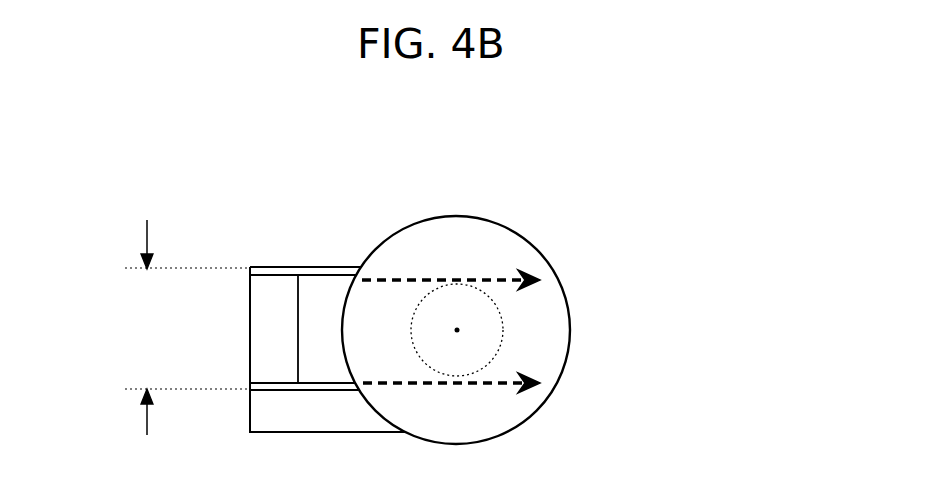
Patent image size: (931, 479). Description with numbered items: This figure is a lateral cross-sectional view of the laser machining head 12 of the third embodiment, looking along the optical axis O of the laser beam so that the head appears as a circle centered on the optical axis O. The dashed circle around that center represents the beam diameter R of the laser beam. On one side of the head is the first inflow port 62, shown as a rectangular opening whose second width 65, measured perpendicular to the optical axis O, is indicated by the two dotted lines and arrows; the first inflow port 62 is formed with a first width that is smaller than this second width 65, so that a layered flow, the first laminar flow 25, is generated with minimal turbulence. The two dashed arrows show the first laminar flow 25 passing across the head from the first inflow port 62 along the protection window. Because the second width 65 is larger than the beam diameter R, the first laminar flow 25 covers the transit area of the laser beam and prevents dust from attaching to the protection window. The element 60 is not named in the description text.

The laser machining head 12 is at (633, 166).
The first laminar flow 25 is at (410, 280).
The housing / casing member 60 is at (278, 266).
The first inflow port 62 is at (327, 298).
The second width 65 is at (144, 241).
The beam diameter R is at (502, 310).
The optical axis O is at (459, 332).